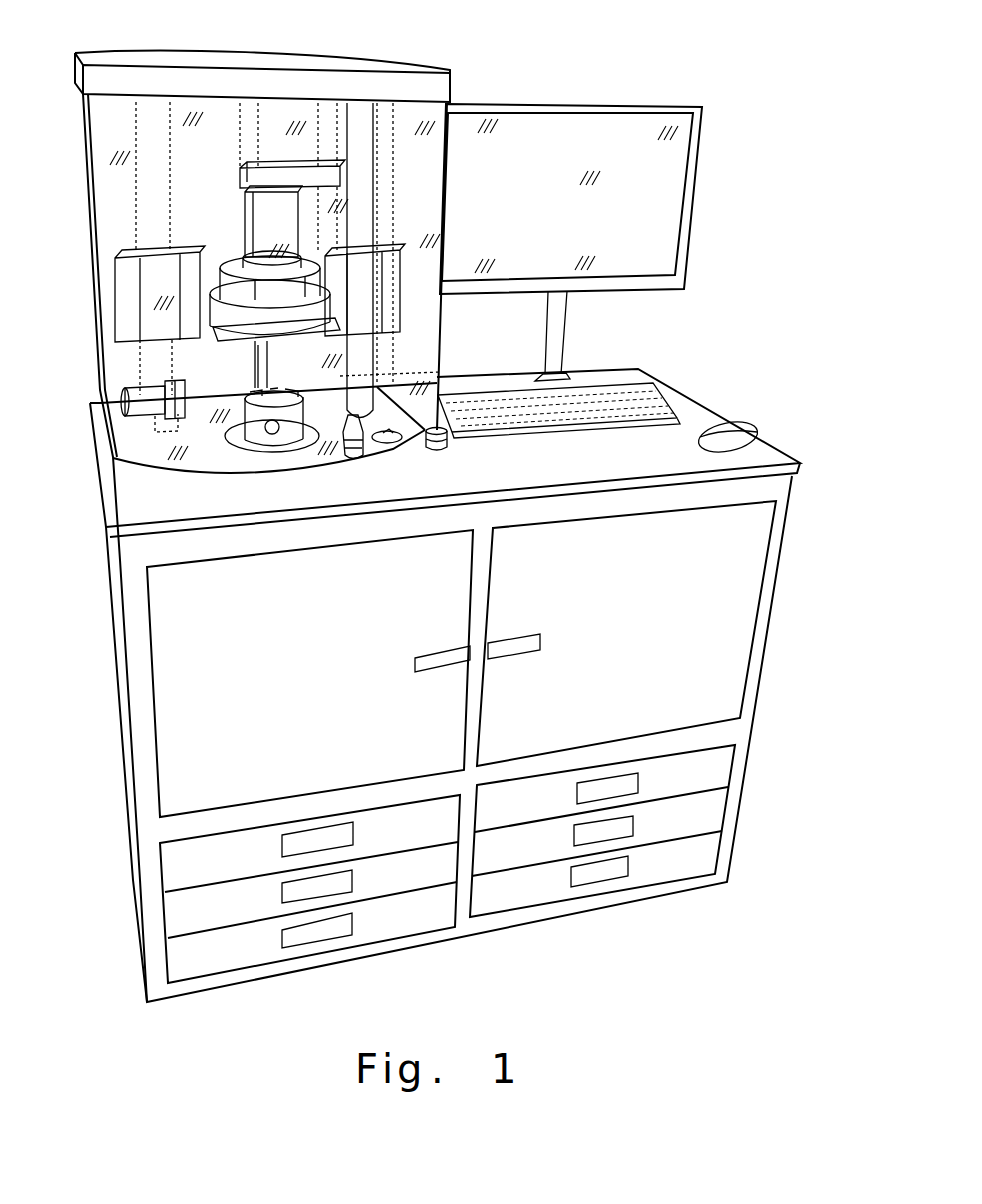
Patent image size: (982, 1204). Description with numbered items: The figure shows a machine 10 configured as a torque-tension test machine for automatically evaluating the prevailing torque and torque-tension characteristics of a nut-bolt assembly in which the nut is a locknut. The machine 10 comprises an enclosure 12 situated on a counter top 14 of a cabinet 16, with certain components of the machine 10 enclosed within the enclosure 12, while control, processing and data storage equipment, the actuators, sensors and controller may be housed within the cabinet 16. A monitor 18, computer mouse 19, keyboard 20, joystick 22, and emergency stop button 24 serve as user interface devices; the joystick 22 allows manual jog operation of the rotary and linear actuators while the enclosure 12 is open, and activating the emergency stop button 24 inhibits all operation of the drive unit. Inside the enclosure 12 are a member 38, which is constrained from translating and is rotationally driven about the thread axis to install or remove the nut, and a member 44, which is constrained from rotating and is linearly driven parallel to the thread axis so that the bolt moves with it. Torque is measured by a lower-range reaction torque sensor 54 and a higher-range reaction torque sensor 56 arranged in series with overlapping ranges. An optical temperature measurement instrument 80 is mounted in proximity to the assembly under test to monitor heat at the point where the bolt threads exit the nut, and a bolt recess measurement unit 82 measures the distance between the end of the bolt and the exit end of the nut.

The machine 10 is at (703, 303).
The enclosure 12 is at (413, 80).
The counter top 14 is at (694, 410).
The cabinet 16 is at (632, 632).
The monitor 18 is at (650, 178).
The computer mouse 19 is at (741, 432).
The keyboard 20 is at (590, 410).
The joystick 22 is at (353, 444).
The emergency stop button 24 is at (447, 439).
The member 38 is at (282, 427).
The member 44 is at (260, 360).
The reaction torque sensor 54 is at (252, 207).
The reaction torque sensor 56 is at (236, 266).
The optical temperature measurement instrument 80 is at (145, 395).
The bolt recess measurement unit 82 is at (393, 440).